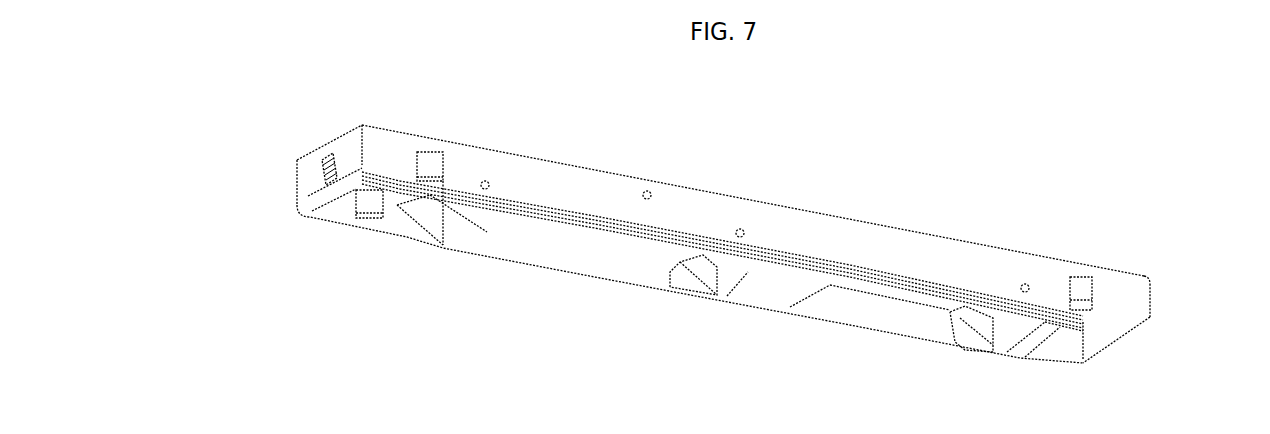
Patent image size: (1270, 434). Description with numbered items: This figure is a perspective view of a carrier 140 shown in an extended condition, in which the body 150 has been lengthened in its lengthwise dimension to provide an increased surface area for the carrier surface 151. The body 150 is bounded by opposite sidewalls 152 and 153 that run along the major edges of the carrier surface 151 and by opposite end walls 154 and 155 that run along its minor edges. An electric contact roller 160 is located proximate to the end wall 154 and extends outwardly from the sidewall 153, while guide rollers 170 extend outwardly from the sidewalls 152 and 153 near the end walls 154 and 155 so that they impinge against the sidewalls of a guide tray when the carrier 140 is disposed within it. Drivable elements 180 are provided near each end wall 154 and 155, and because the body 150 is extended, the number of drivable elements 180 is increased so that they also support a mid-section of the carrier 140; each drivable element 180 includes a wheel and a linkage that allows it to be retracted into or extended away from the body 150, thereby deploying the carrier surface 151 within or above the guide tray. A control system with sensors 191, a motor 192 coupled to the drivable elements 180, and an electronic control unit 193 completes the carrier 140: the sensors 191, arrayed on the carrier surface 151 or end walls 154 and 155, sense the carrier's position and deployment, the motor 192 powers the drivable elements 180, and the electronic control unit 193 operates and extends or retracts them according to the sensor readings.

The carrier 140 is at (322, 144).
The body 150 is at (813, 228).
The carrier surface 151 is at (563, 163).
The sidewall 152 is at (520, 262).
The sidewall 153 is at (1062, 270).
The end wall 154 is at (342, 139).
The end wall 155 is at (1118, 335).
The electric contact roller 160 is at (435, 162).
The guide roller 170 is at (1087, 292).
The drivable element 180 is at (407, 232).
The sensor 191 is at (327, 168).
The motor 192 is at (615, 250).
The electronic control unit 193 is at (778, 288).